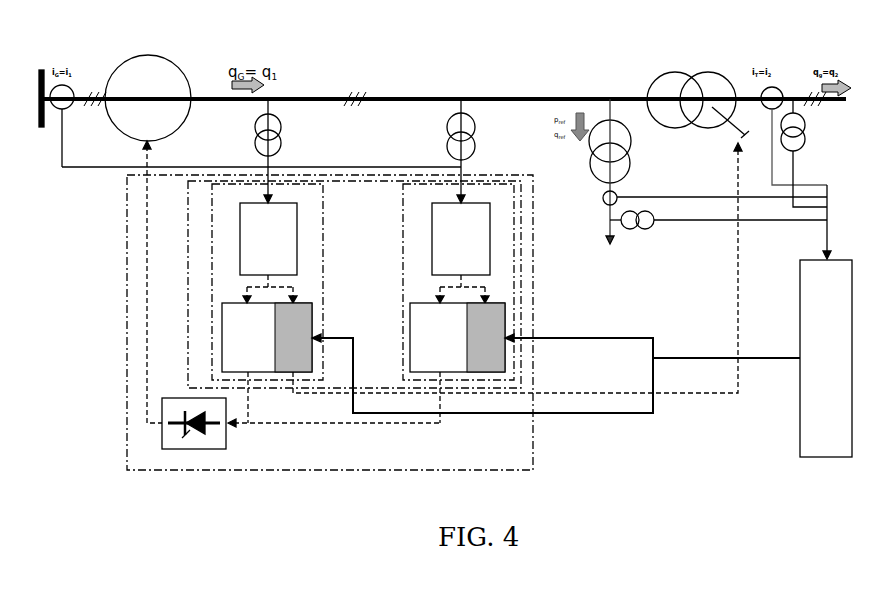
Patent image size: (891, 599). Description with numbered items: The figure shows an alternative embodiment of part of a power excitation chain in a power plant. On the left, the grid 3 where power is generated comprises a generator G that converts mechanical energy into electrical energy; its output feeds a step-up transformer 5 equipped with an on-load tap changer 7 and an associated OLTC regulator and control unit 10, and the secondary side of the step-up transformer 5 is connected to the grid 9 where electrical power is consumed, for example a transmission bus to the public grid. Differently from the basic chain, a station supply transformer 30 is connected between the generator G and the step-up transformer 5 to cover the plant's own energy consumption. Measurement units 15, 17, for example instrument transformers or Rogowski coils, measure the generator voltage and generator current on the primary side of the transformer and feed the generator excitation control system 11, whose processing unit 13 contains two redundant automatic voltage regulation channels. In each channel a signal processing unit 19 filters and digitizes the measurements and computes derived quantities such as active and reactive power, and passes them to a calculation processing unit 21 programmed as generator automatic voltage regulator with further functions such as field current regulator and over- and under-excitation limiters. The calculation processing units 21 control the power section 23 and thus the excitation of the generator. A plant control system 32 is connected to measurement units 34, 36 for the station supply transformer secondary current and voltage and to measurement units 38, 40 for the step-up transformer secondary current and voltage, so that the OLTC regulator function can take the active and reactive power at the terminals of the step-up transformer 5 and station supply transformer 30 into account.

The grid 3 is at (157, 55).
The step-up transformer 5 is at (693, 70).
The on-load tap changer 7 is at (642, 151).
The grid 9 is at (838, 106).
The OLTC regulator and control unit 10 is at (303, 307).
The generator excitation control system 11 is at (533, 457).
The processing unit 13 is at (523, 248).
The measurement unit 15 is at (320, 136).
The measurement unit 17 is at (46, 155).
The signal processing unit 19 is at (365, 239).
The calculation processing unit 21 is at (217, 308).
The power section 23 is at (187, 448).
The station supply transformer 30 is at (633, 150).
The plant control system 32 is at (826, 358).
The measurement unit 34 is at (605, 190).
The measurement unit 36 is at (637, 228).
The measurement unit 38 is at (783, 85).
The measurement unit 40 is at (805, 148).